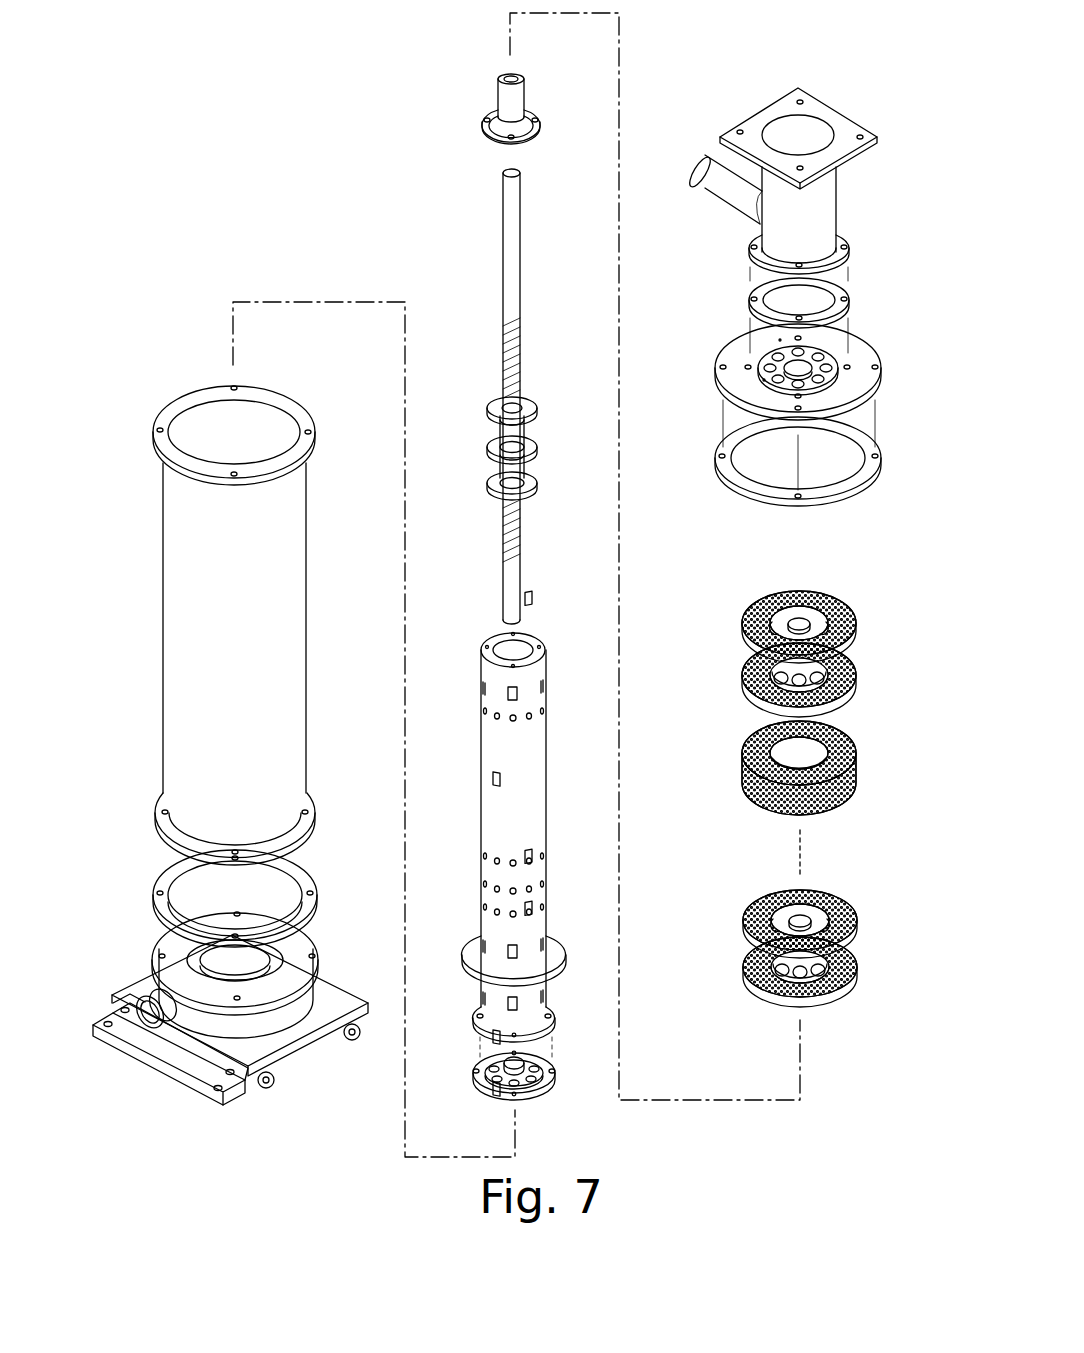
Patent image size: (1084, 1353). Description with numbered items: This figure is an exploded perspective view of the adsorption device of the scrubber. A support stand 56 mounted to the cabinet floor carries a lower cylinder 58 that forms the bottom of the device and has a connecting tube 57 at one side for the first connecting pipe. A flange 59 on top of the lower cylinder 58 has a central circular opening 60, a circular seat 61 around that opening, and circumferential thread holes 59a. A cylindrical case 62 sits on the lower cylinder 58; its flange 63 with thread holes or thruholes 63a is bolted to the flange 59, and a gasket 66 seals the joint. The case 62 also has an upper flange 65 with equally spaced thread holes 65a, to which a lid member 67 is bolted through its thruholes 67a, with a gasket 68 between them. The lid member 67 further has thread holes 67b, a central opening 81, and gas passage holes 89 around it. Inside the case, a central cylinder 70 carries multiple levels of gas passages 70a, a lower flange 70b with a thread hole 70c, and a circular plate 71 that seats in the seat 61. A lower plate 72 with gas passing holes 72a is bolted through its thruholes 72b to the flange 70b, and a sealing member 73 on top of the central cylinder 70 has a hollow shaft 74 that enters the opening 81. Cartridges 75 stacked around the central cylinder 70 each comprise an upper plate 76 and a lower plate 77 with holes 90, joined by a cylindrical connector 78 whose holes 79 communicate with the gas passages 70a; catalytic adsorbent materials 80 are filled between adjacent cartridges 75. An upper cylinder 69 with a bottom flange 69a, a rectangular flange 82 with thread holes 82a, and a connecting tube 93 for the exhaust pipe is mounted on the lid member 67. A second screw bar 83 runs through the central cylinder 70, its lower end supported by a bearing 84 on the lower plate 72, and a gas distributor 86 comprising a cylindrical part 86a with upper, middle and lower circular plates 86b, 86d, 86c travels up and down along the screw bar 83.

The support stand 56 is at (282, 1040).
The connecting tube 57 is at (150, 1040).
The lower cylinder 58 is at (258, 1026).
The flange 59 is at (306, 945).
The thread holes 59a is at (318, 956).
The circular opening 60 is at (237, 970).
The circular seat 61 is at (192, 948).
The cylindrical case 62 is at (163, 610).
The flange 63 is at (158, 812).
The thread holes or thruholes 63a is at (313, 805).
The upper flange 65 is at (284, 404).
The thread holes 65a is at (158, 428).
The gasket 66 is at (170, 882).
The lid member 67 is at (853, 348).
The thruholes 67a is at (880, 368).
The thread holes 67b is at (849, 368).
The gasket 68 is at (868, 478).
The upper cylinder 69 is at (836, 216).
The flange 69a is at (846, 256).
The central cylinder 70 is at (512, 843).
The gas passages 70a is at (544, 945).
The flange 70b is at (548, 1040).
The thread hole 70c is at (482, 1000).
The circular plate 71 is at (556, 975).
The lower plate 72 is at (519, 1090).
The gas passing holes 72a is at (488, 1082).
The thruholes 72b is at (557, 1073).
The sealing member 73 is at (484, 131).
The hollow shaft 74 is at (505, 95).
The cartridges 75 is at (805, 662).
The upper plate 76 is at (805, 615).
The lower plate 77 is at (824, 688).
The cylindrical connector 78 is at (767, 698).
The holes 79 is at (822, 700).
The catalytic adsorbent materials 80 is at (858, 777).
The opening 81 is at (762, 380).
The rectangular flange 82 is at (846, 128).
The thread holes 82a is at (864, 137).
The second screw bar 83 is at (506, 240).
The bearing 84 is at (506, 1058).
The gas distributor 86 is at (507, 422).
The cylindrical part 86a is at (520, 472).
The circular plate 86b is at (498, 400).
The circular plate 86c is at (492, 484).
The circular plate 86d is at (495, 442).
The gas passage holes 89 is at (780, 340).
The holes 90 is at (748, 620).
The connecting tube 93 is at (732, 195).